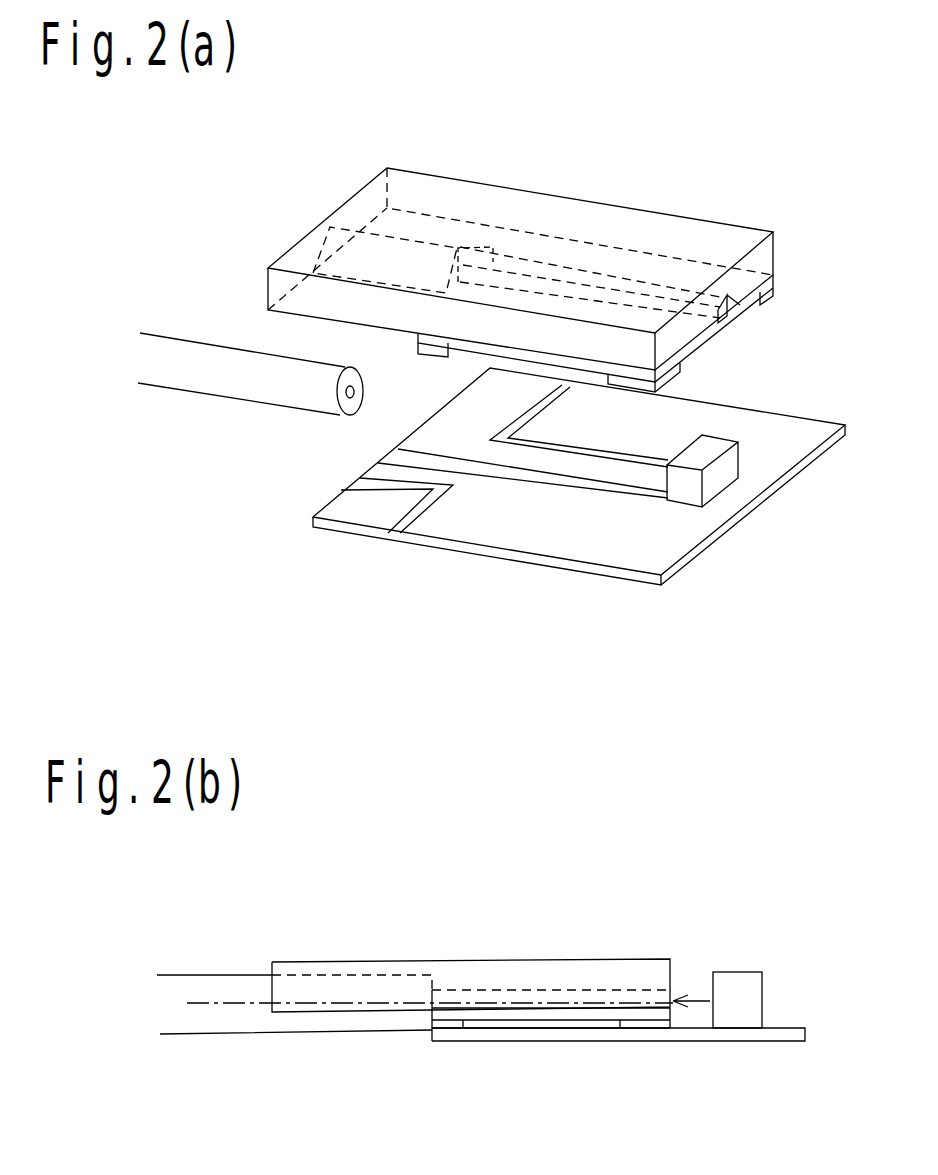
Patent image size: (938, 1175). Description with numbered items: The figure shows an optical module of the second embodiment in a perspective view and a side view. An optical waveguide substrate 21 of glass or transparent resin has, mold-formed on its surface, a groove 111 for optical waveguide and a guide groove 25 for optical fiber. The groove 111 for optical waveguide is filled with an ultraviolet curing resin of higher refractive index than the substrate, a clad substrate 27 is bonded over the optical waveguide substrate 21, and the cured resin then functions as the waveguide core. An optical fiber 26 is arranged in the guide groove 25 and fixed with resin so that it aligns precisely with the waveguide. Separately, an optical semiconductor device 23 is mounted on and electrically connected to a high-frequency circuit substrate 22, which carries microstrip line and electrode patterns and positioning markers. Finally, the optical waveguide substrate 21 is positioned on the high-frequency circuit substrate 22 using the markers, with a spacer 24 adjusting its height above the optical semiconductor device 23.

In FIG. 2A, the optical waveguide substrate 21 is at (617, 204).
In FIG. 2B, the optical waveguide substrate 21 is at (648, 958).
In FIG. 2A, the high-frequency circuit substrate 22 is at (563, 540).
In FIG. 2B, the high-frequency circuit substrate 22 is at (785, 1030).
In FIG. 2A, the optical semiconductor device 23 is at (716, 485).
In FIG. 2B, the optical semiconductor device 23 is at (745, 972).
In FIG. 2A, the spacer 24 is at (420, 360).
In FIG. 2B, the spacer 24 is at (455, 1028).
In FIG. 2A, the guide groove for optical fiber 25 is at (398, 235).
In FIG. 2A, the optical fiber 26 is at (177, 350).
In FIG. 2B, the optical fiber 26 is at (237, 1022).
In FIG. 2A, the clad substrate 27 is at (745, 307).
In FIG. 2B, the clad substrate 27 is at (643, 1010).
In FIG. 2A, the groove for optical waveguide 111 is at (724, 310).